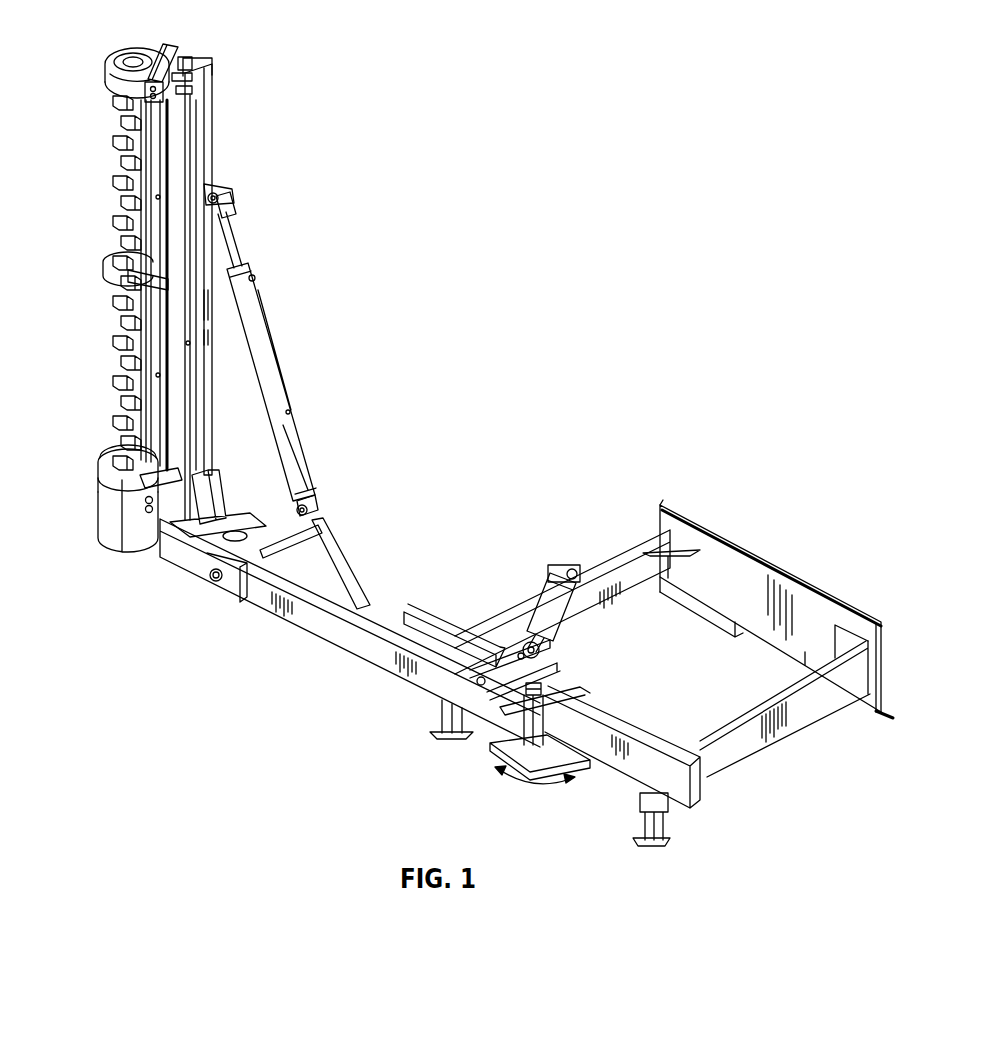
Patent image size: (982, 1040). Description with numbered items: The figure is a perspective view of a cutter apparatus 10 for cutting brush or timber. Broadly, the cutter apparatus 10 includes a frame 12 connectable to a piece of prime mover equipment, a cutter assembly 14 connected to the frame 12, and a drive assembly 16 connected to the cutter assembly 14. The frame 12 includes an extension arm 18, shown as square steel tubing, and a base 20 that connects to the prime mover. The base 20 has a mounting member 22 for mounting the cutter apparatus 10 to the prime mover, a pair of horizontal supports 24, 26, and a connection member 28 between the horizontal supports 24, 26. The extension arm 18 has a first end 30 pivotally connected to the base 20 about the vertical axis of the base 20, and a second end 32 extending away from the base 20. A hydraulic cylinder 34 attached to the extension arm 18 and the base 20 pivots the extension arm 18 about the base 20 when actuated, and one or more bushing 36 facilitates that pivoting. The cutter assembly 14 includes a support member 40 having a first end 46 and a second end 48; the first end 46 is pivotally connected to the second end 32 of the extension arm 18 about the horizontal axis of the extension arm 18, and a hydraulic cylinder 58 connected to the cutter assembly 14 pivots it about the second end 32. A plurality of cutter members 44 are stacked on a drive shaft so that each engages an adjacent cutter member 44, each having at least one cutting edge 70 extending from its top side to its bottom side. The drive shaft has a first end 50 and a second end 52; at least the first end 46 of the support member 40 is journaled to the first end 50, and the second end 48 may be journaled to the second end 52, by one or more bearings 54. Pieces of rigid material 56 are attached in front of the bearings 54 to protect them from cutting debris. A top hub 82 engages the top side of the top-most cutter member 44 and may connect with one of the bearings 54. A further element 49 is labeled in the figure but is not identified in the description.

The cutter apparatus 10 is at (527, 283).
The frame 12 is at (620, 548).
The cutter assembly 14 is at (113, 149).
The drive assembly 16 is at (110, 545).
The extension arm 18 is at (323, 637).
The base 20 is at (713, 527).
The mounting member 22 is at (763, 560).
The horizontal support 24 is at (602, 613).
The horizontal support 26 is at (747, 702).
The connection member 28 is at (633, 783).
The first end of extension arm 30 is at (497, 735).
The second end of extension arm 32 is at (252, 597).
The hydraulic cylinder 34 is at (547, 588).
The bushing 36 is at (547, 683).
The support member 40 is at (205, 130).
The cutter members 44 is at (115, 218).
The first end of support member 46 is at (212, 458).
The second end of support member 48 is at (197, 67).
The cutter chain 49 is at (115, 343).
The first end of drive shaft 50 is at (113, 458).
The second end of drive shaft 52 is at (135, 45).
The bearings 54 is at (113, 67).
The rigid material 56 is at (117, 84).
The hydraulic cylinder 58 is at (283, 367).
The cutting edge 70 is at (115, 183).
The top hub 82 is at (182, 418).